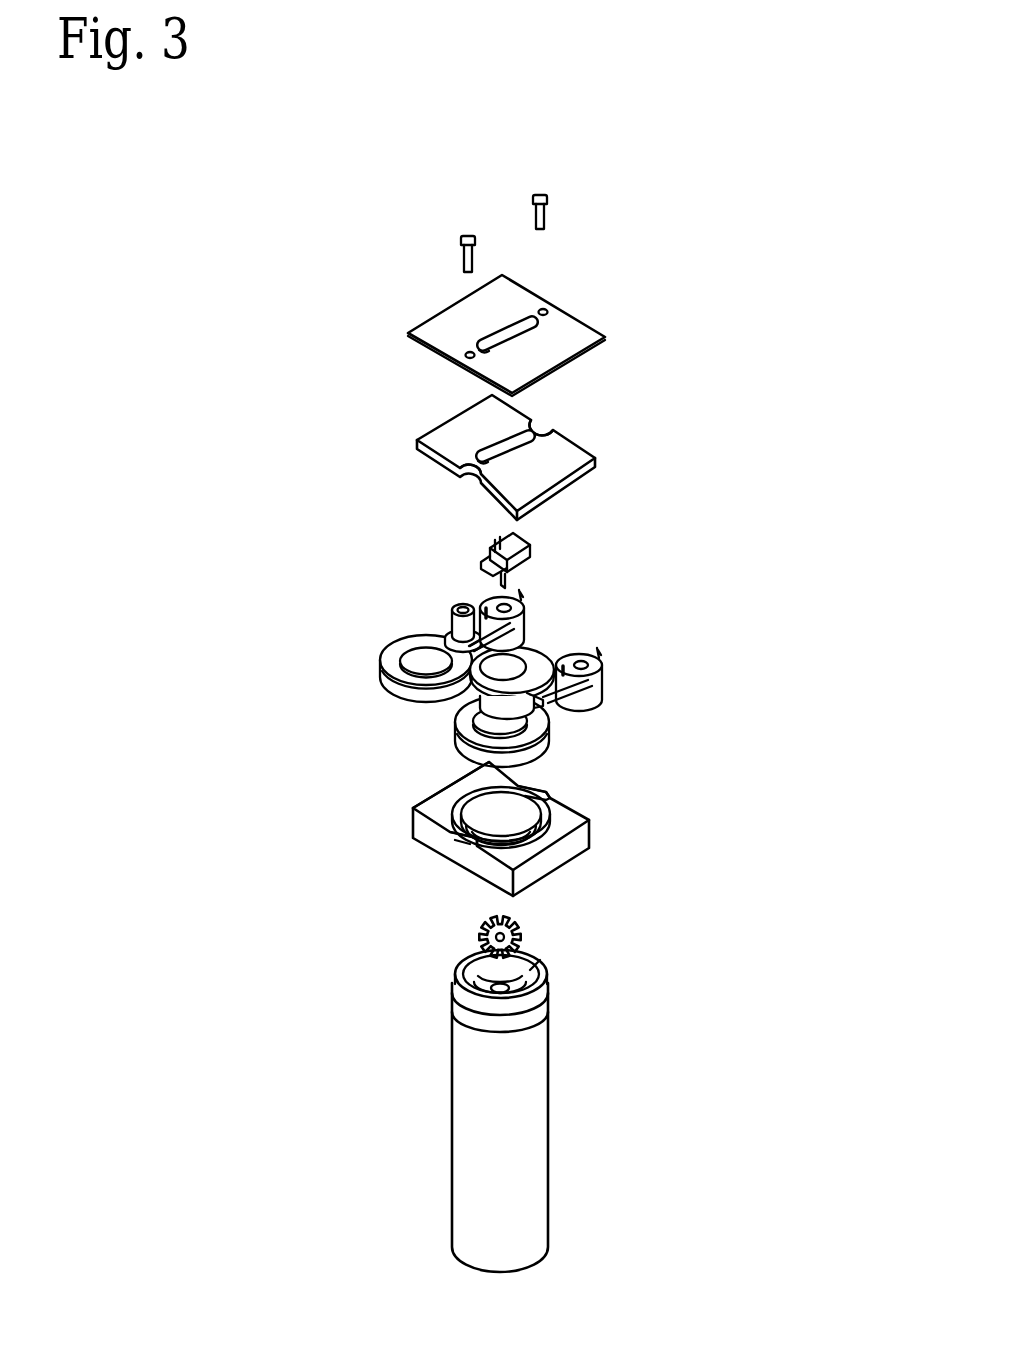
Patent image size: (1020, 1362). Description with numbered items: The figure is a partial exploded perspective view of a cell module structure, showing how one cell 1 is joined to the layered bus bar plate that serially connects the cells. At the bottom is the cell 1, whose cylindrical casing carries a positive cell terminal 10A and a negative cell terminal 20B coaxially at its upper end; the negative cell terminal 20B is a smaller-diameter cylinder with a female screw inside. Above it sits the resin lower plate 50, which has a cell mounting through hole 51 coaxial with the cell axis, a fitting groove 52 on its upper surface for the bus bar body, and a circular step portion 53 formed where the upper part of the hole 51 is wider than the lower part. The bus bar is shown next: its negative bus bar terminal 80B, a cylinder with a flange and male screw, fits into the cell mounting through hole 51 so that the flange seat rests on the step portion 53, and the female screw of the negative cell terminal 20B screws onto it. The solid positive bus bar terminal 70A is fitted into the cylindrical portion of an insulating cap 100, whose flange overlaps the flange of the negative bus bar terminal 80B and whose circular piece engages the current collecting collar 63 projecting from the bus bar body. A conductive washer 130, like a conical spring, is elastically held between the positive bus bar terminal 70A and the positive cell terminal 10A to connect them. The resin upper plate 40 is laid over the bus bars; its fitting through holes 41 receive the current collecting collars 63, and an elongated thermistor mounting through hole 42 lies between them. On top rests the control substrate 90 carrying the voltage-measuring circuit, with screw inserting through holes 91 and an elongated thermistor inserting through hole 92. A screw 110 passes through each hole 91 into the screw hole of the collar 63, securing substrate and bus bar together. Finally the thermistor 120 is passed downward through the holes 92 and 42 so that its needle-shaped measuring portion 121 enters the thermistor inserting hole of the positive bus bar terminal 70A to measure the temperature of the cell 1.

The cell 1 is at (535, 1130).
The positive cell terminal 10A is at (548, 976).
The negative cell terminal 20B is at (460, 966).
The upper plate 40 is at (563, 445).
The fitting through hole 41 is at (558, 430).
The thermistor mounting through hole 42 is at (502, 443).
The lower plate 50 is at (555, 860).
The cell mounting through hole 51 is at (498, 834).
The fitting groove 52 is at (548, 794).
The step portion 53 is at (470, 770).
The current collecting collar 63 is at (453, 620).
The positive bus bar terminal 70A is at (524, 606).
The negative bus bar terminal 80B is at (380, 657).
The control substrate 90 is at (460, 317).
The screw inserting through hole 91 is at (466, 354).
The thermistor inserting through hole 92 is at (503, 330).
The insulating cap 100 is at (550, 643).
The screw 110 is at (461, 238).
The thermistor 120 is at (505, 538).
The measuring portion 121 is at (505, 573).
The conductive washer 130 is at (520, 934).